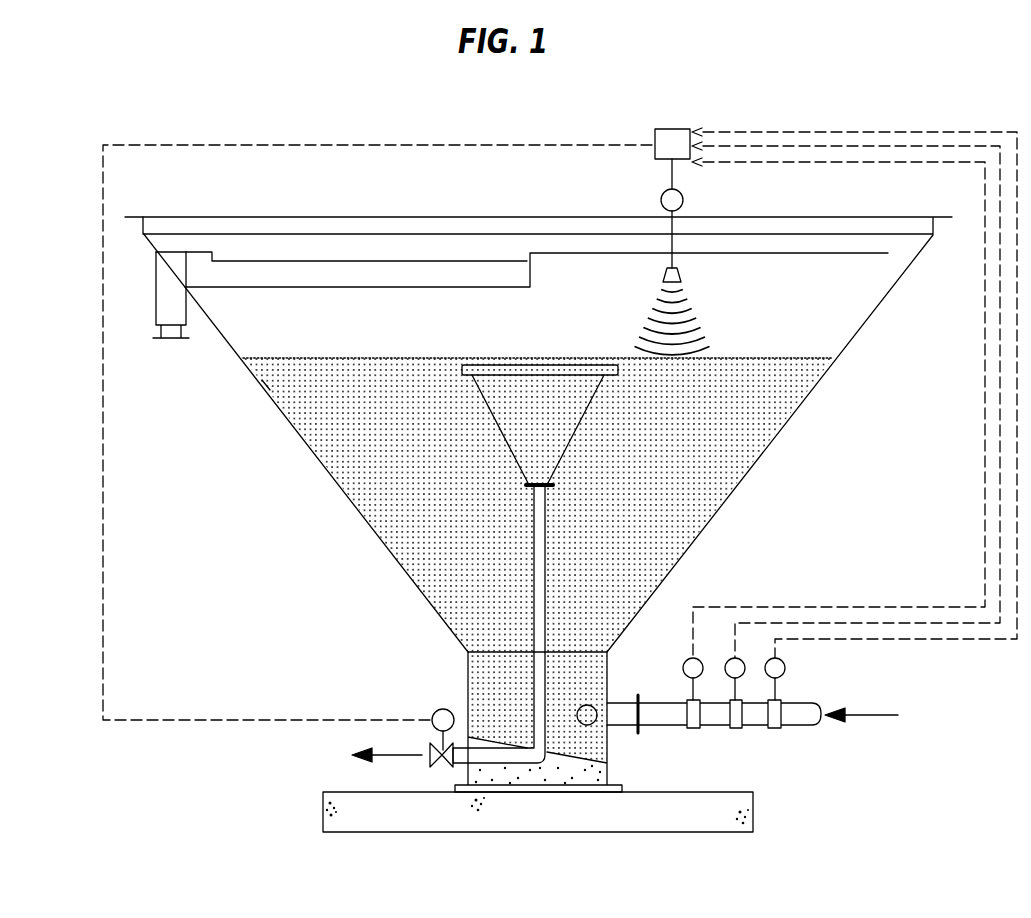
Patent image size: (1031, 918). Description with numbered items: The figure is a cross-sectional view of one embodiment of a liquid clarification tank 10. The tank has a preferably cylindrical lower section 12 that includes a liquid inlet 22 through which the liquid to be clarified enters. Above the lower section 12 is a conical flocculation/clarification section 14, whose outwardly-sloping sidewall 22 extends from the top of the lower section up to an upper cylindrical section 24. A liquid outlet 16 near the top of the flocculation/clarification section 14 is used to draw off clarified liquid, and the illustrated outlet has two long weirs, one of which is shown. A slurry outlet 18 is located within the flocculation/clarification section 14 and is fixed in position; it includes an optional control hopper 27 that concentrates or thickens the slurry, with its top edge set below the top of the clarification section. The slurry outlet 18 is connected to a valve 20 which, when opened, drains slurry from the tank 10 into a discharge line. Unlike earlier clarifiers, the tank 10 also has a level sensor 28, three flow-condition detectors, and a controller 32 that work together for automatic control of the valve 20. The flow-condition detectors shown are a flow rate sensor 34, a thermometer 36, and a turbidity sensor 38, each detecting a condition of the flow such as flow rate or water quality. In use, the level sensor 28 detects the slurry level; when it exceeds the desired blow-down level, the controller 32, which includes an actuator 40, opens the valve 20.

The liquid clarification tank 10 is at (538, 434).
The lower section 12 is at (486, 665).
The flocculation/clarification section 14 is at (397, 503).
The liquid outlet 16 is at (168, 298).
The slurry outlet 18 is at (545, 533).
The valve 20 is at (437, 766).
The liquid inlet 22 is at (595, 722).
The upper cylindrical section 24 is at (143, 220).
The control hopper 27 is at (572, 412).
The level sensor 28 is at (684, 199).
The controller 32 is at (665, 135).
The flow rate sensor 34 is at (684, 662).
The thermometer 36 is at (726, 661).
The turbidity sensor 38 is at (786, 668).
The actuator 40 is at (438, 708).